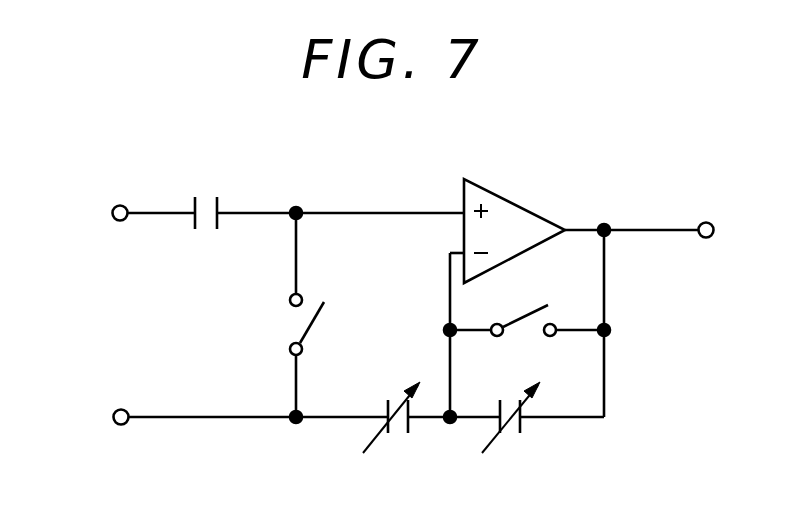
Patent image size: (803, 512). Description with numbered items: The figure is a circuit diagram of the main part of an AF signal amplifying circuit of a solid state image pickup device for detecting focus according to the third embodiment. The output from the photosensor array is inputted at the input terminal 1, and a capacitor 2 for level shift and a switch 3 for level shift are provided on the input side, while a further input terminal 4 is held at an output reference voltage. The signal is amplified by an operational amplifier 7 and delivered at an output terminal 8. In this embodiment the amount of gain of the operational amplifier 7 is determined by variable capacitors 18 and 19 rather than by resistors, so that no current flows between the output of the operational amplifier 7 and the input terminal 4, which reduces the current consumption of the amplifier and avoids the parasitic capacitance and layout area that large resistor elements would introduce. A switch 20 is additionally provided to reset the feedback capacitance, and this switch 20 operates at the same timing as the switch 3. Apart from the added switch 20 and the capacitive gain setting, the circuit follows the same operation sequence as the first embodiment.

The input terminal 1 is at (111, 213).
The capacitor 2 is at (205, 192).
The switch 3 is at (290, 322).
The input terminal 4 is at (112, 417).
The operational amplifier 7 is at (504, 198).
The output terminal 8 is at (707, 221).
The variable capacitor 18 is at (398, 440).
The variable capacitor 19 is at (510, 440).
The switch 20 is at (528, 339).